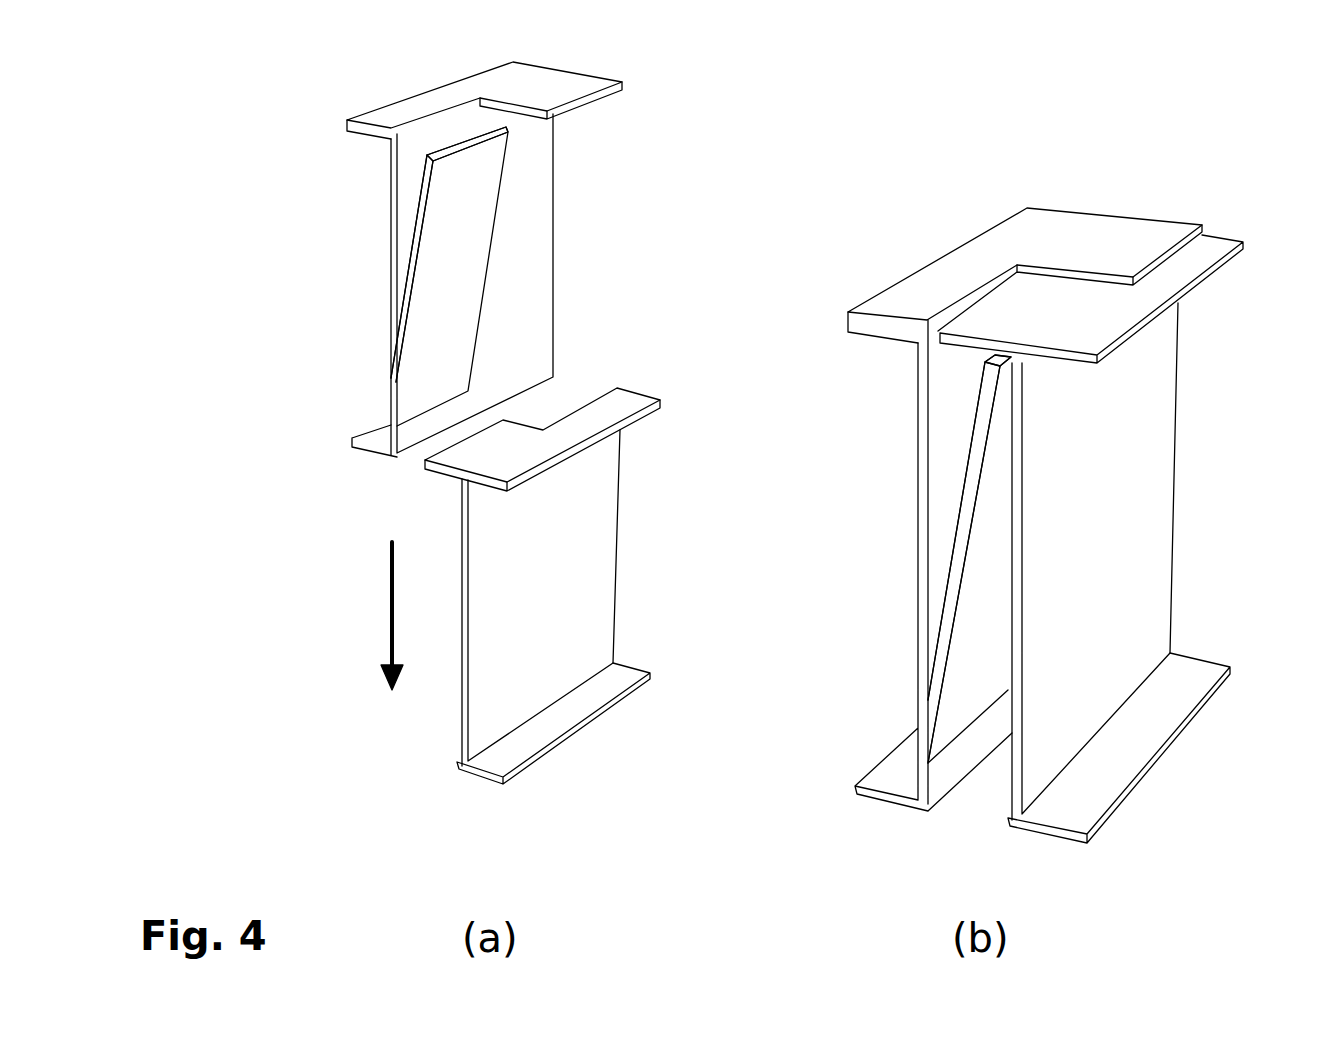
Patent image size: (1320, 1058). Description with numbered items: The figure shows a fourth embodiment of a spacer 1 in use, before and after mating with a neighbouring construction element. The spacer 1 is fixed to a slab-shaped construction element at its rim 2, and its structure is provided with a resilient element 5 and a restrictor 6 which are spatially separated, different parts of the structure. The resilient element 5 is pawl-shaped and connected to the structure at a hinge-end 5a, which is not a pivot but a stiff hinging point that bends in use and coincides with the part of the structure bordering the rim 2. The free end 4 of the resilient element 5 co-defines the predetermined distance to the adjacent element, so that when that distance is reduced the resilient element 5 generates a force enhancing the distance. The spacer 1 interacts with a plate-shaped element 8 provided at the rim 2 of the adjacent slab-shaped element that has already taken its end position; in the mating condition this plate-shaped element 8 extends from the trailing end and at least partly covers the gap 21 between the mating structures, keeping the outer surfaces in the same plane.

The spacer 1 is at (580, 240).
The rim 2 is at (513, 643).
The free end 4 is at (427, 157).
The resilient element 5 is at (455, 235).
The hinge-end 5a is at (390, 378).
The restrictor 6 is at (587, 83).
The plate-shaped element 8 is at (460, 460).
The gap 21 is at (987, 788).